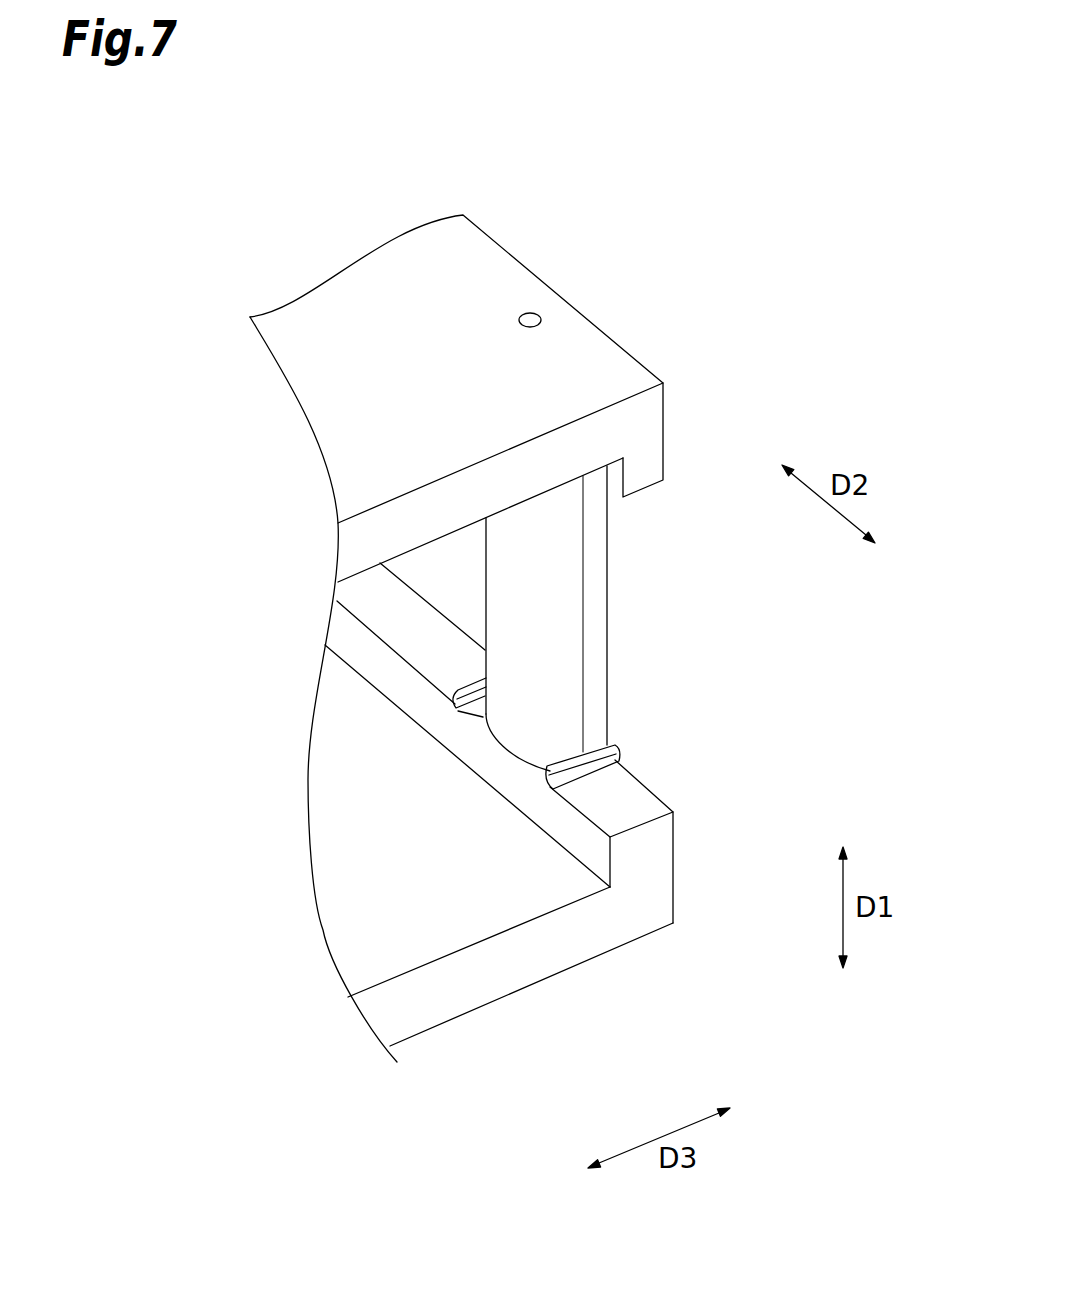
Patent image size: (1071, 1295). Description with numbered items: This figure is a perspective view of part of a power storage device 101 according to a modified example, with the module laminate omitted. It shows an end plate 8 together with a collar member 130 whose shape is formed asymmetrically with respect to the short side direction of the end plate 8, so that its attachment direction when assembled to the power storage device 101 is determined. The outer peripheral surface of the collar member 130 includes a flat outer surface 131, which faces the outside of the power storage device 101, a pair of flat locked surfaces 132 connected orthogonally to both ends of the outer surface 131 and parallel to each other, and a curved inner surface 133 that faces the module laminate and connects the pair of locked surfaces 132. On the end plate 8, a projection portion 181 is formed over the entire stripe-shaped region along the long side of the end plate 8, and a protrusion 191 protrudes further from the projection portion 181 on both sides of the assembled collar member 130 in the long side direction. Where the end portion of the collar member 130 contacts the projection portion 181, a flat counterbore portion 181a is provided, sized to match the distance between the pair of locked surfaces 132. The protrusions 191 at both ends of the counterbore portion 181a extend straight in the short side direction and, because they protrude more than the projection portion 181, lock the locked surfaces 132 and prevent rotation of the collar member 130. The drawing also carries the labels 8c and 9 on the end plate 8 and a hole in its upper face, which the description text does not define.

The power storage device 101 is at (714, 176).
The end plate 8 is at (347, 317).
The bottom surface of housing 8c is at (513, 892).
The hole 9 is at (529, 312).
The collar member 130 is at (616, 585).
The outer surface 131 is at (608, 545).
The locked surface 132 is at (597, 625).
The inner surface 133 is at (530, 633).
The projection portion 181 is at (645, 462).
The counterbore portion 181a is at (482, 718).
The protrusion 191 is at (472, 686).